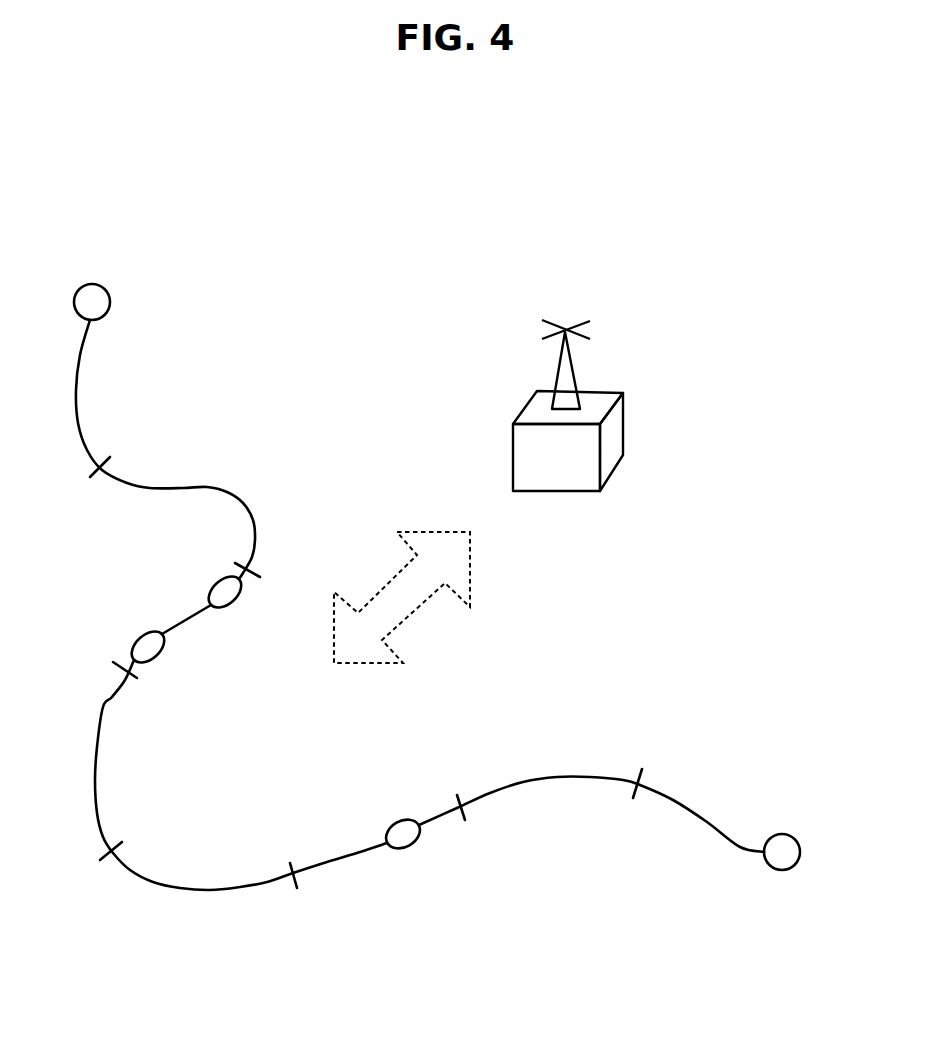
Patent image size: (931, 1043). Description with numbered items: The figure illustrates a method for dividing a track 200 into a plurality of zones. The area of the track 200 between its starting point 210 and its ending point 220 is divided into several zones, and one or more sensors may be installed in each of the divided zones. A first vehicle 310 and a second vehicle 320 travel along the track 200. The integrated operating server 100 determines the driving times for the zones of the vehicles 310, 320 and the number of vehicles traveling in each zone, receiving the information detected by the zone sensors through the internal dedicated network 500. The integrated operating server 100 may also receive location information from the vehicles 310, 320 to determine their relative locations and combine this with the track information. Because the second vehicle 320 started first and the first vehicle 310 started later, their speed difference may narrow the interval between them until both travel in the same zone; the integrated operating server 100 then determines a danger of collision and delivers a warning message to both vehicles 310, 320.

The integrated operating server 100 is at (512, 447).
The track 200 is at (165, 487).
The starting point 210 is at (97, 284).
The ending point 220 is at (773, 836).
The first vehicle 310 is at (213, 587).
The second vehicle 320 is at (139, 637).
The internal dedicated network 500 is at (402, 597).